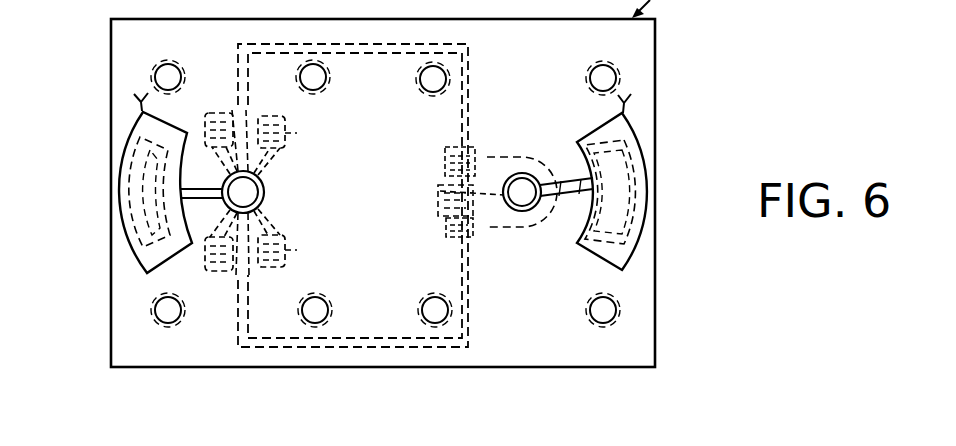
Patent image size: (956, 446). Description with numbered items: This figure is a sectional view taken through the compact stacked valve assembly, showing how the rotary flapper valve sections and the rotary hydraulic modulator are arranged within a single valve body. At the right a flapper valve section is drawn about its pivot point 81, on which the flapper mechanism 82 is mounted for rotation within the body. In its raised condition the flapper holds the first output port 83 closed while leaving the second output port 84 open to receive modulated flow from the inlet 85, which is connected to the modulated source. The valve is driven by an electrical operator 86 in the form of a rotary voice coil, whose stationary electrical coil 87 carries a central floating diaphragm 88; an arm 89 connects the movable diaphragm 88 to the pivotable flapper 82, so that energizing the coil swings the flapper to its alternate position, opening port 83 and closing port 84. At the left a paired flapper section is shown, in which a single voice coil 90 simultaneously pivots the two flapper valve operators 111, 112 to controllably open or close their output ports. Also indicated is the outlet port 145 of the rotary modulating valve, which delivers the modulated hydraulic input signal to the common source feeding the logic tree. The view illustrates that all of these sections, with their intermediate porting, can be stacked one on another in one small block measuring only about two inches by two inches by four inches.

The pivot point 81 is at (527, 208).
The flapper mechanism 82 is at (500, 156).
The first output port 83 is at (448, 152).
The second output port 84 is at (448, 236).
The inlet 85 is at (440, 191).
The electrical operator 86 is at (650, 153).
The stationary electrical coil 87 is at (650, 222).
The central floating diaphragm 88 is at (652, 183).
The arm 89 is at (565, 181).
The voice coil 90 is at (123, 167).
The flapper valve operator 111 is at (254, 104).
The flapper valve operator 112 is at (258, 224).
The outlet port 145 is at (197, 130).